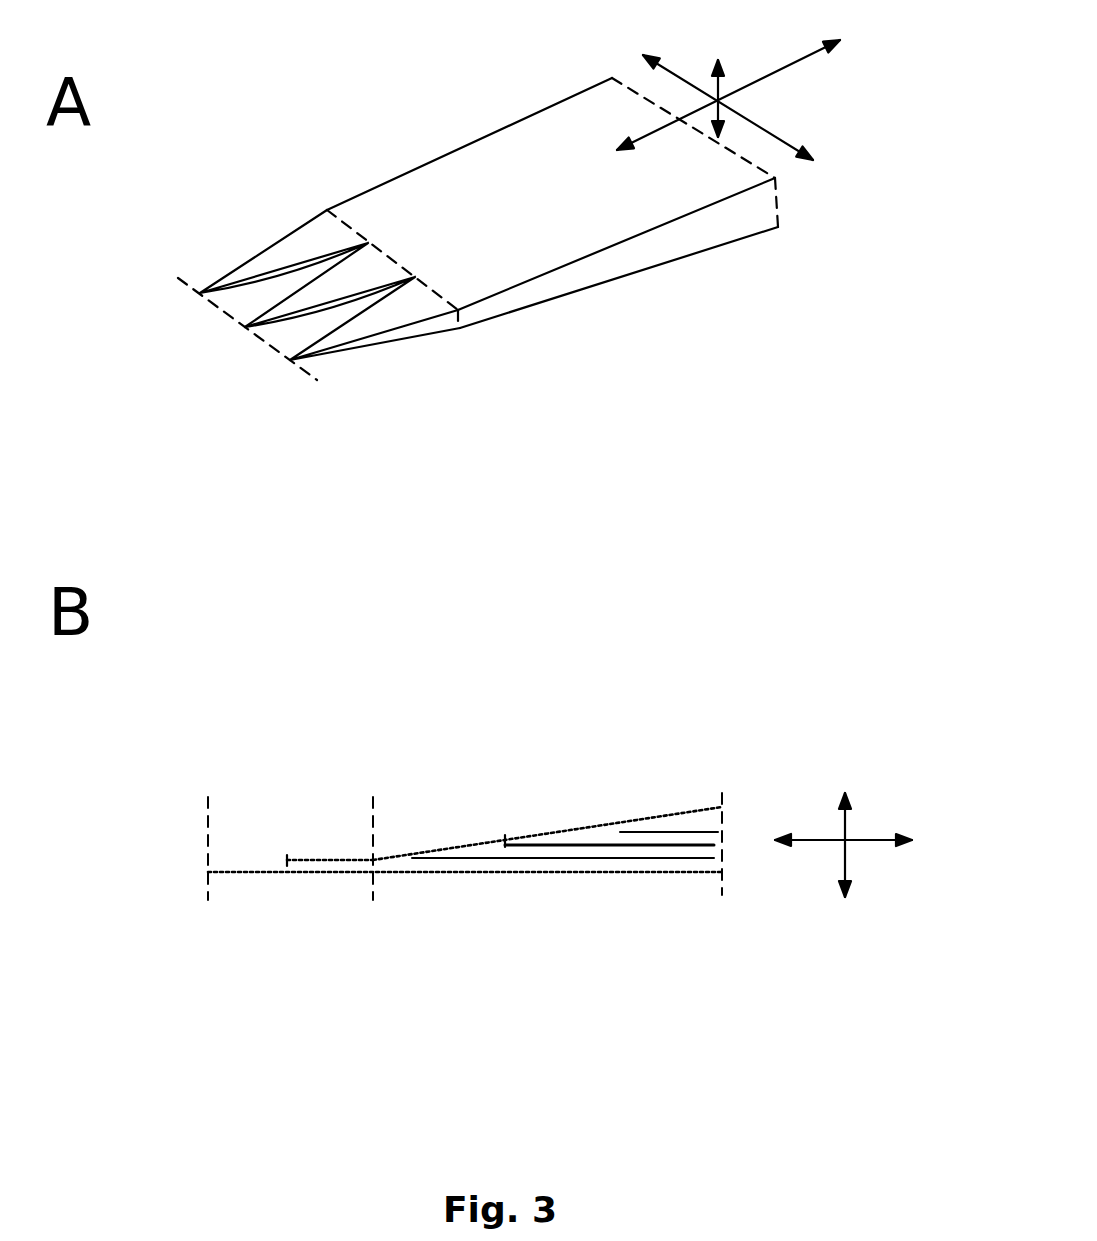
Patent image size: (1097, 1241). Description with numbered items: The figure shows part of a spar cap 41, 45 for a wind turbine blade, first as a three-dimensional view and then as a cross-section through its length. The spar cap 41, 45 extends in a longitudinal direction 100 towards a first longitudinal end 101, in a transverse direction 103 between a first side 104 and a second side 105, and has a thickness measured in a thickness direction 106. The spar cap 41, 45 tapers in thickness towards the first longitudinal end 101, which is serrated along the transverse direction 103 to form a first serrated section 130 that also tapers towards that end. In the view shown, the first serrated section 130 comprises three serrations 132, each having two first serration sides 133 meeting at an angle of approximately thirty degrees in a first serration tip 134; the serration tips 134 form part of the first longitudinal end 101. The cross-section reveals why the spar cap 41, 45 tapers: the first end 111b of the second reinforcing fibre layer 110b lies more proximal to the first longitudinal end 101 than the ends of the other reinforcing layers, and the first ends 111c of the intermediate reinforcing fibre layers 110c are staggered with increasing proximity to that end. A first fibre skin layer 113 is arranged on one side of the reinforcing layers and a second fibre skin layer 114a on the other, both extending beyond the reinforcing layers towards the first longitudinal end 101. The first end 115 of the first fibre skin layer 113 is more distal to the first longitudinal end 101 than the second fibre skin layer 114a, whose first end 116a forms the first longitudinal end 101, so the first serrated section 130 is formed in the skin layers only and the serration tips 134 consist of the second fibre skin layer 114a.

In FIG. 3A, the first spar cap 41 is at (442, 239).
In FIG. 3A, the second spar cap 45 is at (442, 239).
In FIG. 3A, the longitudinal direction 100 is at (751, 80).
In FIG. 3B, the longitudinal direction 100 is at (871, 837).
In FIG. 3A, the transverse direction 103 is at (703, 92).
In FIG. 3A, the thickness direction 106 is at (726, 82).
In FIG. 3B, the thickness direction 106 is at (849, 823).
In FIG. 3A, the first side of spar cap 104 is at (642, 250).
In FIG. 3A, the second side of spar cap 105 is at (484, 132).
In FIG. 3A, the first serrated section 130 is at (293, 304).
In FIG. 3B, the first serrated section 130 is at (205, 778).
In FIG. 3A, the serration 132 is at (350, 278).
In FIG. 3A, the serration side 133 is at (273, 307).
In FIG. 3A, the first longitudinal end of spar cap 101 is at (210, 349).
In FIG. 3B, the first longitudinal end of spar cap 101 is at (395, 812).
In FIG. 3A, the serration tip 134 is at (243, 330).
In FIG. 3B, the serration tip 134 is at (395, 812).
In FIG. 3B, the first end of primary second fibre skin layer 116a is at (207, 872).
In FIG. 3B, the first end of first fibre skin layer 115 is at (296, 861).
In FIG. 3B, the primary second fibre skin layer 114a is at (480, 873).
In FIG. 3B, the first end of second reinforcing fibre layer 111b is at (418, 850).
In FIG. 3B, the first end of intermediate reinforcing fibre layer 111c is at (627, 830).
In FIG. 3B, the first fibre skin layer 113 is at (690, 808).
In FIG. 3B, the second reinforcing fibre layer 110b is at (650, 862).
In FIG. 3B, the intermediate reinforcing fibre layer 110c is at (680, 834).